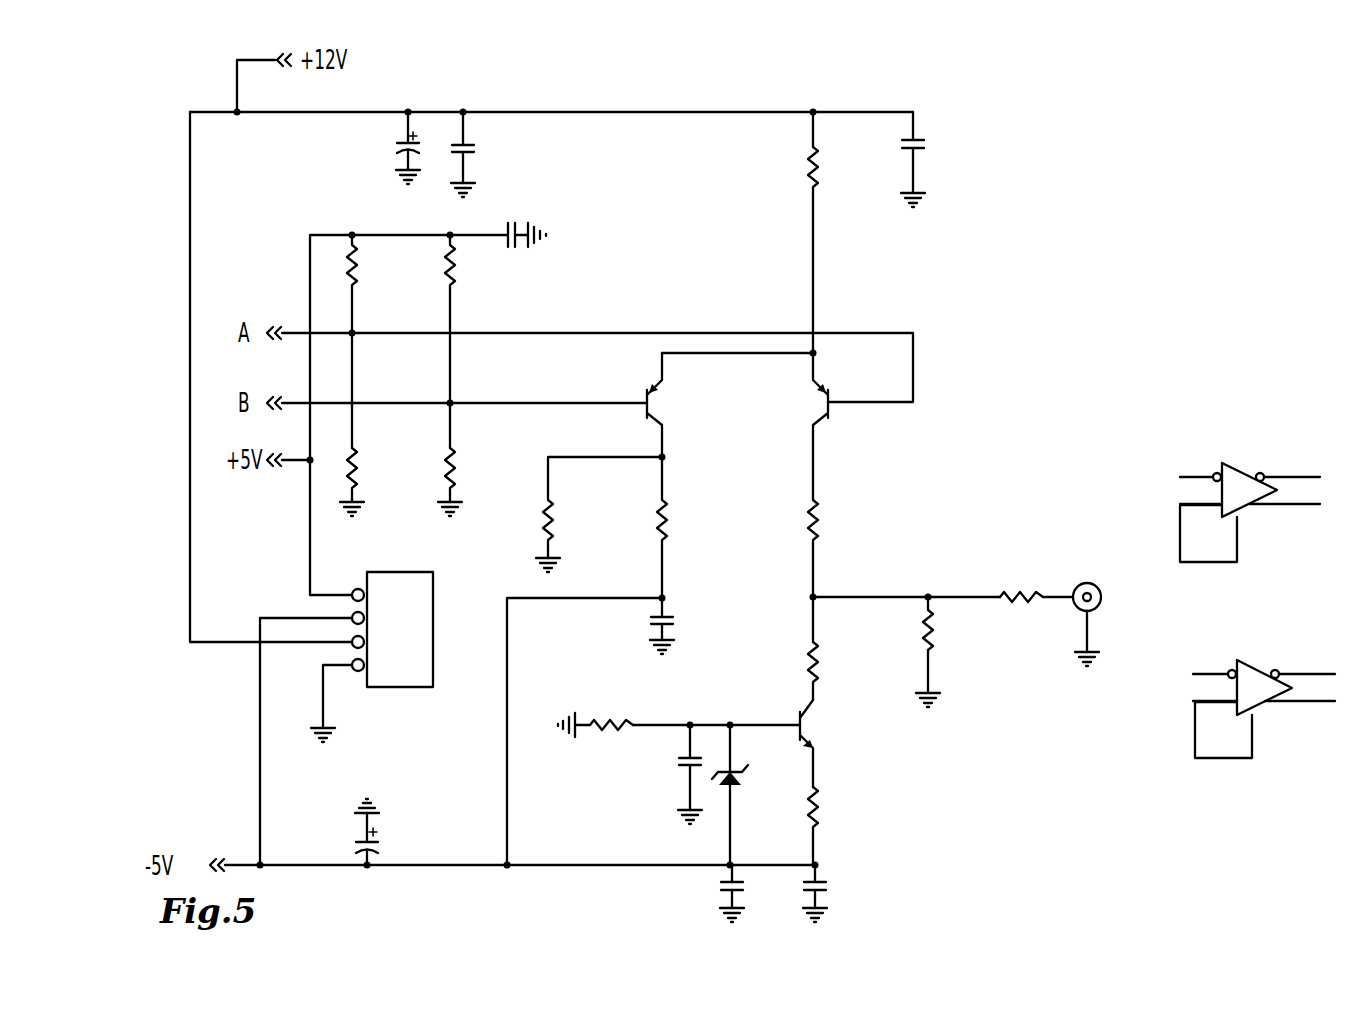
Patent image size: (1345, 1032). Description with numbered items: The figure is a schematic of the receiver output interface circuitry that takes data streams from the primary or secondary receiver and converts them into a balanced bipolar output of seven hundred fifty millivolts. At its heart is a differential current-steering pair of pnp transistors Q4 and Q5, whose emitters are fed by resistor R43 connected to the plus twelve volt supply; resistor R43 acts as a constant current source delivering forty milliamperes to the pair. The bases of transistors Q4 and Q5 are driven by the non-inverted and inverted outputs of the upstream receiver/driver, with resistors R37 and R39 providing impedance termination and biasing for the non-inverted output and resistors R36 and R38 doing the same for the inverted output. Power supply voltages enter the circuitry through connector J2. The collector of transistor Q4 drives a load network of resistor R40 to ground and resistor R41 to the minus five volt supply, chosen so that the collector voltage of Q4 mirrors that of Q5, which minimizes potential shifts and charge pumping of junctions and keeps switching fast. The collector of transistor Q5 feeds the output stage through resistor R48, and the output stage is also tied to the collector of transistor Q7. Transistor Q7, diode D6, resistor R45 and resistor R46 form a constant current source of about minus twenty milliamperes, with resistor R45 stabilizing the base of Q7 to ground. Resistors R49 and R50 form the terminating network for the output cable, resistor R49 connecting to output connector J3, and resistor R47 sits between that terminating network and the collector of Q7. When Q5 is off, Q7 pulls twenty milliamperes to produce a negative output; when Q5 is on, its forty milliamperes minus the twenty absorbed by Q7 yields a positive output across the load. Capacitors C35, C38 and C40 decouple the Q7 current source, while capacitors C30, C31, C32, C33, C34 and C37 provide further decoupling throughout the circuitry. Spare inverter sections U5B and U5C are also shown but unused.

The capacitor C30 is at (386, 832).
The capacitor C31 is at (385, 148).
The capacitor C32 is at (483, 154).
The capacitor C33 is at (506, 182).
The capacitor C34 is at (681, 626).
The capacitor C35 is at (671, 774).
The capacitor C37 is at (933, 159).
The capacitor C38 is at (834, 893).
The capacitor C40 is at (751, 893).
The resistor R36 is at (469, 472).
The resistor R37 is at (371, 472).
The resistor R38 is at (470, 341).
The resistor R39 is at (371, 341).
The resistor R40 is at (599, 514).
The resistor R41 is at (684, 527).
The resistor R43 is at (836, 246).
The resistor R45 is at (595, 702).
The resistor R46 is at (838, 817).
The resistor R47 is at (838, 648).
The resistor R48 is at (836, 541).
The resistor R49 is at (1035, 573).
The resistor R50 is at (948, 652).
The transistor Q4 is at (730, 405).
The transistor Q5 is at (847, 440).
The transistor Q7 is at (737, 737).
The diode D6 is at (744, 795).
The connector J2 is at (371, 641).
The connector J3 is at (1095, 589).
The spare inverter U5B is at (1250, 477).
The spare inverter U5C is at (1264, 672).